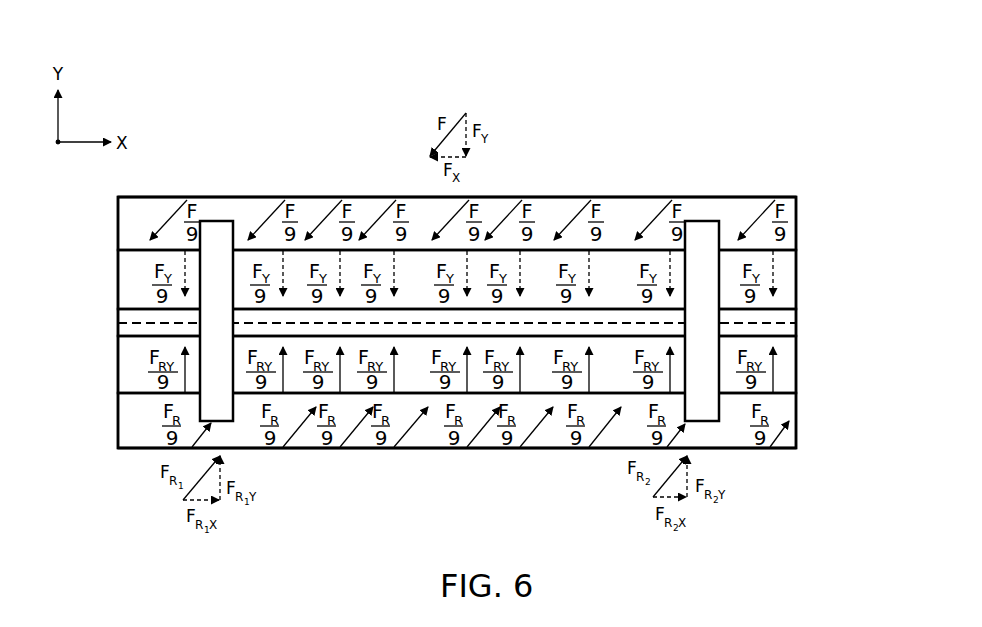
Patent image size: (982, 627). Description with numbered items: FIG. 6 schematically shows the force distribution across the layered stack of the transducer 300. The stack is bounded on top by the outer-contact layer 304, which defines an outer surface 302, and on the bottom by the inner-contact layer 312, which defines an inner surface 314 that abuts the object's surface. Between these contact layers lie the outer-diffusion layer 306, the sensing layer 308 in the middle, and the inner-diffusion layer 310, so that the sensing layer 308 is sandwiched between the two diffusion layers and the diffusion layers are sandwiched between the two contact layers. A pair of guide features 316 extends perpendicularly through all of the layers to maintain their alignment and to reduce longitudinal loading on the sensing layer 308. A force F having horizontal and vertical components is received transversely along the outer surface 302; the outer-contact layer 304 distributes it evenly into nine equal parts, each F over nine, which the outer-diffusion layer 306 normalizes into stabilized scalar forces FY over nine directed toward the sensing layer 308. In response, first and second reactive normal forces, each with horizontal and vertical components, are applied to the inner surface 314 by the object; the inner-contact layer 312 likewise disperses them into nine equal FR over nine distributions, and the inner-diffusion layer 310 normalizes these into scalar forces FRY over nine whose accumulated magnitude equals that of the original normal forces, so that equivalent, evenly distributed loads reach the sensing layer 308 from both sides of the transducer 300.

The transducer 300 is at (457, 250).
The outer surface 302 is at (367, 196).
The outer-contact layer 304 is at (797, 208).
The outer-diffusion layer 306 is at (787, 286).
The sensing layer 308 is at (788, 315).
The inner-diffusion layer 310 is at (787, 367).
The inner-contact layer 312 is at (787, 412).
The inner surface 314 is at (345, 448).
The guide features 316 is at (215, 230).